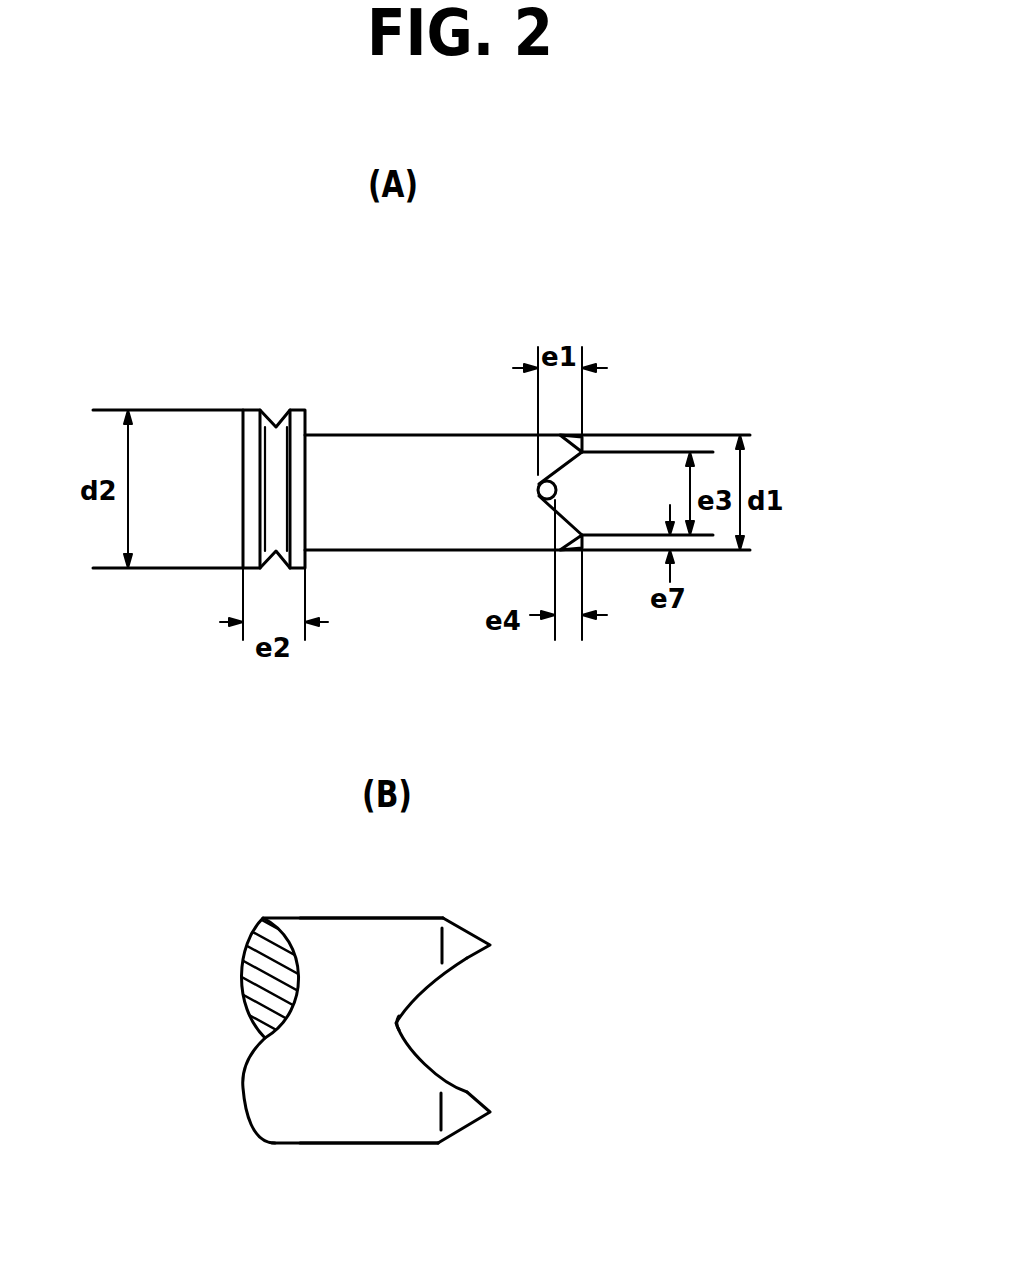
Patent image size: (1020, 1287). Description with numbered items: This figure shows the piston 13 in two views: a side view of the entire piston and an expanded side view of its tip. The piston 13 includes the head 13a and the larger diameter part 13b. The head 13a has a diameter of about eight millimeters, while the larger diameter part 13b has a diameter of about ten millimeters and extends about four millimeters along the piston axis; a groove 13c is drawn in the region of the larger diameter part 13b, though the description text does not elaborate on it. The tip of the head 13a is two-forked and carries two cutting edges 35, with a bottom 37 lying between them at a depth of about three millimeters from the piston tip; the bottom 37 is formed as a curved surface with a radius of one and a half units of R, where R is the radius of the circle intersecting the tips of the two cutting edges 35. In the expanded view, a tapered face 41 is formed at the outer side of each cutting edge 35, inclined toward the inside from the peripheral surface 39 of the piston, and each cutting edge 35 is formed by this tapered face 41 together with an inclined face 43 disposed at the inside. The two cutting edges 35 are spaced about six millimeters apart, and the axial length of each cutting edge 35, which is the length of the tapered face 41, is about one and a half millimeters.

The piston 13 is at (413, 407).
The head 13a is at (424, 549).
The larger diameter part 13b is at (248, 540).
The groove 13c is at (276, 420).
The cutting edge 35 is at (583, 437).
The bottom 37 is at (536, 492).
The peripheral surface 39 is at (374, 917).
The tapered face 41 is at (461, 929).
The inclined face 43 is at (468, 958).